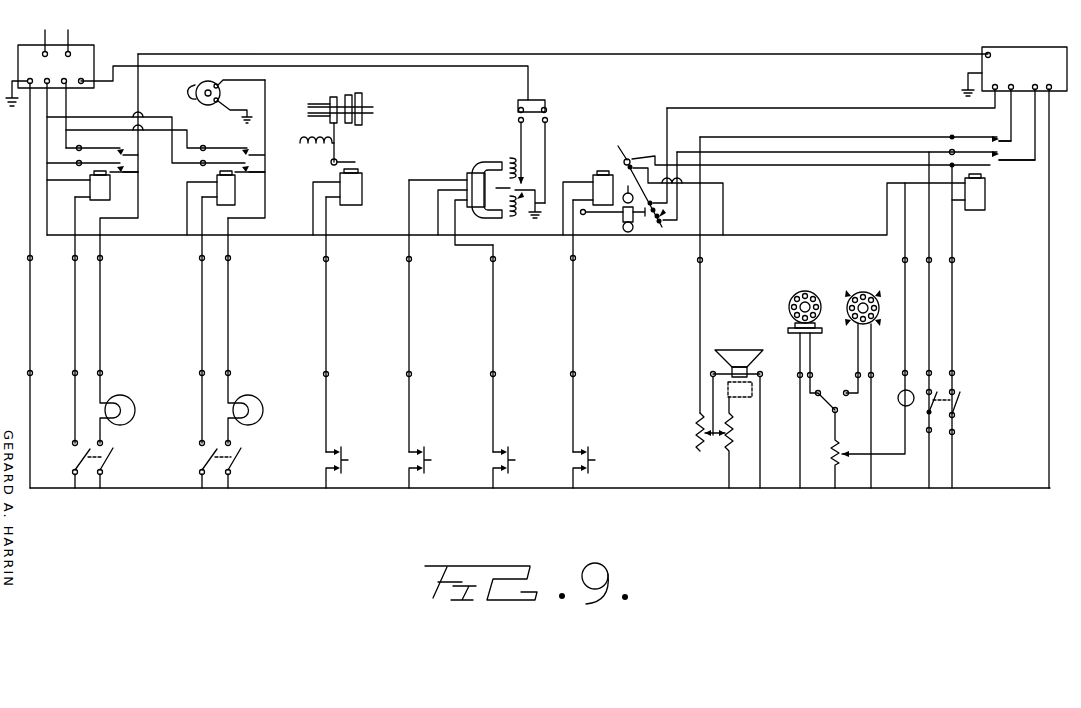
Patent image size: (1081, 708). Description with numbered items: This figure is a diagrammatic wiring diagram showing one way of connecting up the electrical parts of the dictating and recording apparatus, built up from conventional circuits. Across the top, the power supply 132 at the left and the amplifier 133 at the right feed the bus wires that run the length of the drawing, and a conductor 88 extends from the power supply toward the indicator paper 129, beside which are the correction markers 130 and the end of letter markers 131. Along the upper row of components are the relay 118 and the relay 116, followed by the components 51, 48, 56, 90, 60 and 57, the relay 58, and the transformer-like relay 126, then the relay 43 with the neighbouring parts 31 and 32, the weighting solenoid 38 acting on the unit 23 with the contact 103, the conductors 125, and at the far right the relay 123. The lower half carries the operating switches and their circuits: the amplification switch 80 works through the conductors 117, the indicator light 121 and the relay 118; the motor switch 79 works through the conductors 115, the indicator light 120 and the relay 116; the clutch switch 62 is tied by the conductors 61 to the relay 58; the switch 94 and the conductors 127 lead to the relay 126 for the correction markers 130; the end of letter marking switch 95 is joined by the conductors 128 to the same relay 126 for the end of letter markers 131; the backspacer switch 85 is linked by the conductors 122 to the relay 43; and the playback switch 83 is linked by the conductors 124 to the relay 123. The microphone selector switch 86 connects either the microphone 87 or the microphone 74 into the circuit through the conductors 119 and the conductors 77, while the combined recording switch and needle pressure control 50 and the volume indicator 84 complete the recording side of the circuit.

The power supply 132 is at (50, 68).
The amplifier 133 is at (867, 267).
The conductor 88 is at (528, 72).
The relay 118 is at (92, 173).
The relay 116 is at (226, 157).
The motor 51 is at (204, 105).
The shaft 48 is at (330, 101).
The cam disc 56 is at (362, 104).
The shaft bearing 90 is at (308, 112).
The spring 60 is at (309, 146).
The lever 57 is at (357, 162).
The relay 58 is at (337, 202).
The conductors 61 is at (313, 215).
The relay 126 is at (470, 182).
The indicator paper 129 is at (547, 113).
The correction markers 130 is at (518, 120).
The end of letter markers 131 is at (548, 120).
The relay 43 is at (588, 203).
The roller 31 is at (624, 188).
The roller 32 is at (626, 234).
The weighting solenoid 38 is at (618, 153).
The unit 23 is at (659, 232).
The contact 103 is at (666, 232).
The conductors 125 is at (723, 209).
The relay 123 is at (986, 193).
The conductors 124 is at (953, 346).
The playback switch 83 is at (955, 401).
The conductors 117 is at (88, 320).
The indicator light 121 is at (127, 412).
The amplification switch 80 is at (107, 462).
The conductors 115 is at (215, 320).
The indicator light 120 is at (255, 412).
The motor switch 79 is at (236, 462).
The clutch switch 62 is at (349, 467).
The conductors 127 is at (411, 401).
The contact 94 is at (433, 467).
The conductors 128 is at (495, 401).
The end of letter marking switch 95 is at (517, 467).
The conductors 122 is at (575, 349).
The backspacer switch 85 is at (595, 467).
The microphone 87 is at (789, 310).
The conductors 119 is at (800, 442).
The microphone selector switch 86 is at (828, 403).
The combined recording switch and needle pressure control 50 is at (831, 456).
The microphone 74 is at (872, 293).
The conductors 77 is at (871, 353).
The volume indicator 84 is at (898, 398).